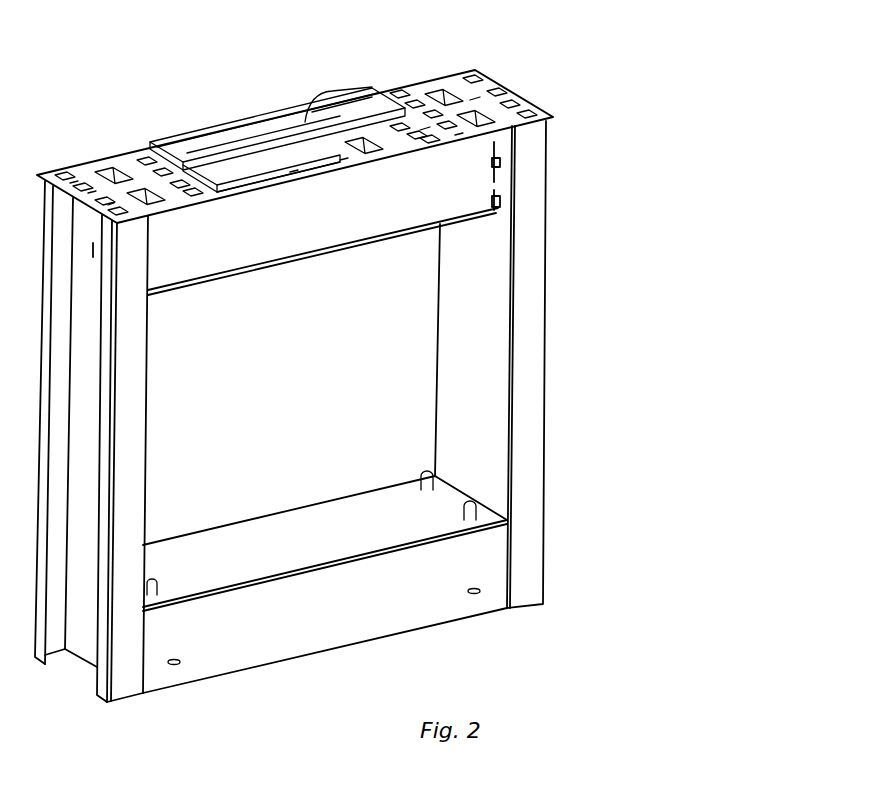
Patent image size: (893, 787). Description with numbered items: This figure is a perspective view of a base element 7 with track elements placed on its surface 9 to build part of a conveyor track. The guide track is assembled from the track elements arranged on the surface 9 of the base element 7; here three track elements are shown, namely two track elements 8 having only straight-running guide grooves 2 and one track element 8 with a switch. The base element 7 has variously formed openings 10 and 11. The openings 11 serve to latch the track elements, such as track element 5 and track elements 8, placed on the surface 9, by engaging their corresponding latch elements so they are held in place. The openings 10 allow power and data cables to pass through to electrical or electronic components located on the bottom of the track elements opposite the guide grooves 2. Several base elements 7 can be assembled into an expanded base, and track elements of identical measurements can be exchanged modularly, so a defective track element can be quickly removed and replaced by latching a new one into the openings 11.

The guide groove 2 is at (235, 143).
The track element 5 is at (215, 140).
The base element 7 is at (559, 234).
The track element 8 is at (305, 120).
The surface 9 is at (410, 92).
The opening 10 is at (105, 177).
The opening 11 is at (476, 80).